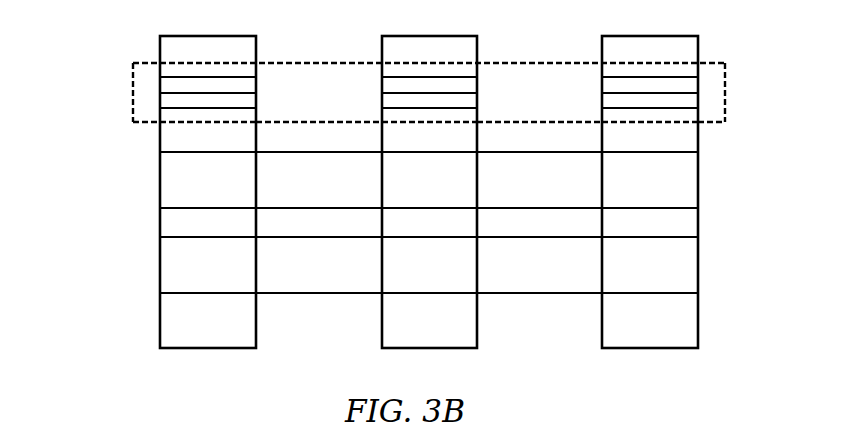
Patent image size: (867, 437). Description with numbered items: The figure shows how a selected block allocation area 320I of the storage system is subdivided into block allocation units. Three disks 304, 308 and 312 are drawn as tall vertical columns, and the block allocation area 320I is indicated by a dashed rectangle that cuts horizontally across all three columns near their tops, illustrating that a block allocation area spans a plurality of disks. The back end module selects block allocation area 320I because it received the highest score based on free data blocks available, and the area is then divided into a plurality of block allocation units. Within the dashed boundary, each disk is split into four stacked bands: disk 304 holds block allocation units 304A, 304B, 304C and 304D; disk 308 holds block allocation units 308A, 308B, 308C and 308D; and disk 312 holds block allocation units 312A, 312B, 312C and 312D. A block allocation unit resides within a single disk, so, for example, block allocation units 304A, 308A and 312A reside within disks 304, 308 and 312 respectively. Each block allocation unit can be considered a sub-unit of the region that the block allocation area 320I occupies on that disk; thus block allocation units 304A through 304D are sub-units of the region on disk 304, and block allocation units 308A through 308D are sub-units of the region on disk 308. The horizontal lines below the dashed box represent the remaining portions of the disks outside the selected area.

The disk 304 is at (210, 349).
The block allocation unit 304A is at (162, 70).
The block allocation unit 304B is at (162, 84).
The block allocation unit 304C is at (162, 103).
The block allocation unit 304D is at (160, 116).
The disk 308 is at (432, 349).
The block allocation unit 308A is at (384, 70).
The block allocation unit 308B is at (384, 84).
The block allocation unit 308C is at (384, 103).
The block allocation unit 308D is at (382, 116).
The disk 312 is at (652, 349).
The block allocation unit 312A is at (604, 70).
The block allocation unit 312B is at (604, 84).
The block allocation unit 312C is at (604, 103).
The block allocation unit 312D is at (602, 116).
The block allocation area 320I is at (133, 66).